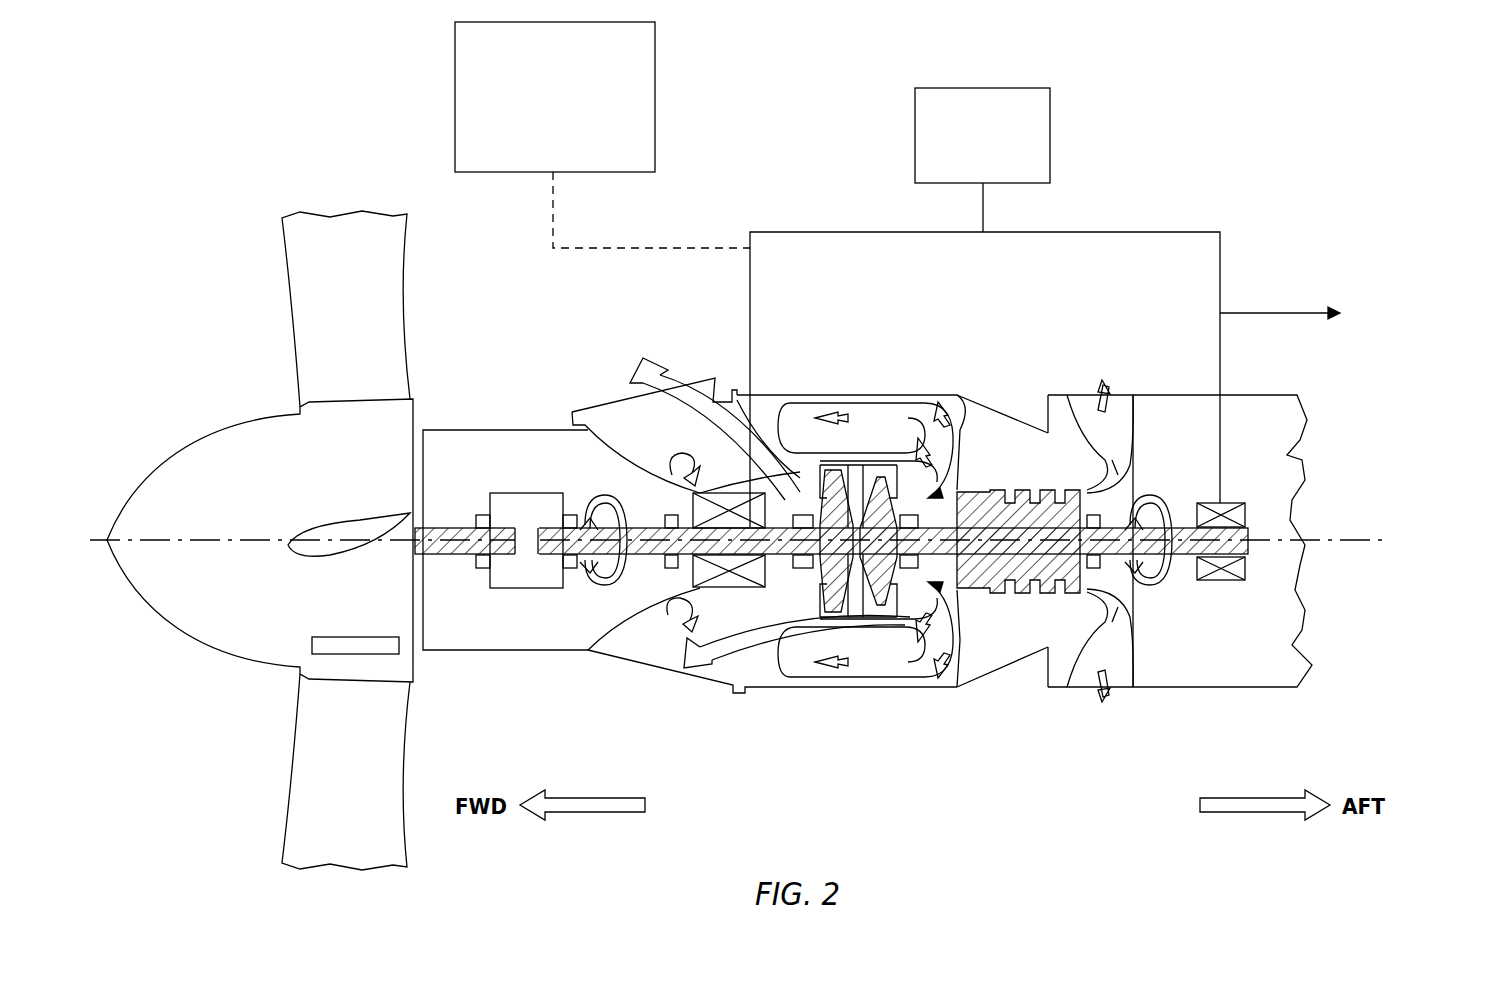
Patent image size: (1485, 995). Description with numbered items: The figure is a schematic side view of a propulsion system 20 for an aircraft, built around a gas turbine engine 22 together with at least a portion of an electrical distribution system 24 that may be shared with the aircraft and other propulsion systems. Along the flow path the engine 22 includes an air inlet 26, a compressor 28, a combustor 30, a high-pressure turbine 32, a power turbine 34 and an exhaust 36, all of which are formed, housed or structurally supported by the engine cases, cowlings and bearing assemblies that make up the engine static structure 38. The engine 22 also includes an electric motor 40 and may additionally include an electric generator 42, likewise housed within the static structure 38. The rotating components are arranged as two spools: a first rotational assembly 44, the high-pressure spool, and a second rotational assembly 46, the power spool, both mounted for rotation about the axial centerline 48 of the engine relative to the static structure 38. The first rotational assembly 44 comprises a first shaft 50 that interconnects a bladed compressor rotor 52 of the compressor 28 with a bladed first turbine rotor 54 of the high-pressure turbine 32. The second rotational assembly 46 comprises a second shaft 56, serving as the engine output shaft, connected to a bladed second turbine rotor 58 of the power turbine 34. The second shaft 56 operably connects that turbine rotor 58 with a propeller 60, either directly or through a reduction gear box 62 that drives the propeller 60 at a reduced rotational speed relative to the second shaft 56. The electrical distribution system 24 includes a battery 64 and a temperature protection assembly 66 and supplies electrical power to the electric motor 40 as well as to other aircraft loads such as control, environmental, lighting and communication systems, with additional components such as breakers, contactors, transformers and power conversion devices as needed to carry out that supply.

The propulsion system 20 is at (1320, 203).
The engine 22 is at (936, 346).
The electrical distribution system 24 is at (852, 188).
The air inlet 26 is at (1121, 392).
The compressor 28 is at (1010, 608).
The combustor 30 is at (866, 400).
The high-pressure turbine 32 is at (970, 640).
The power turbine 34 is at (798, 570).
The exhaust 36 is at (602, 397).
The engine static structure 38 is at (1160, 395).
The electric motor 40 is at (727, 590).
The electric generator 42 is at (1222, 583).
The first rotational assembly 44 is at (930, 498).
The second rotational assembly 46 is at (587, 583).
The axial centerline 48 is at (1372, 545).
The first shaft 50 is at (957, 517).
The bladed compressor rotor 52 is at (1040, 480).
The bladed first turbine rotor 54 is at (878, 592).
The second shaft 56 is at (783, 512).
The bladed second turbine rotor 58 is at (833, 470).
The propeller 60 is at (222, 640).
The reduction gear box 62 is at (528, 493).
The battery 64 is at (972, 162).
The temperature protection assembly 66 is at (544, 155).